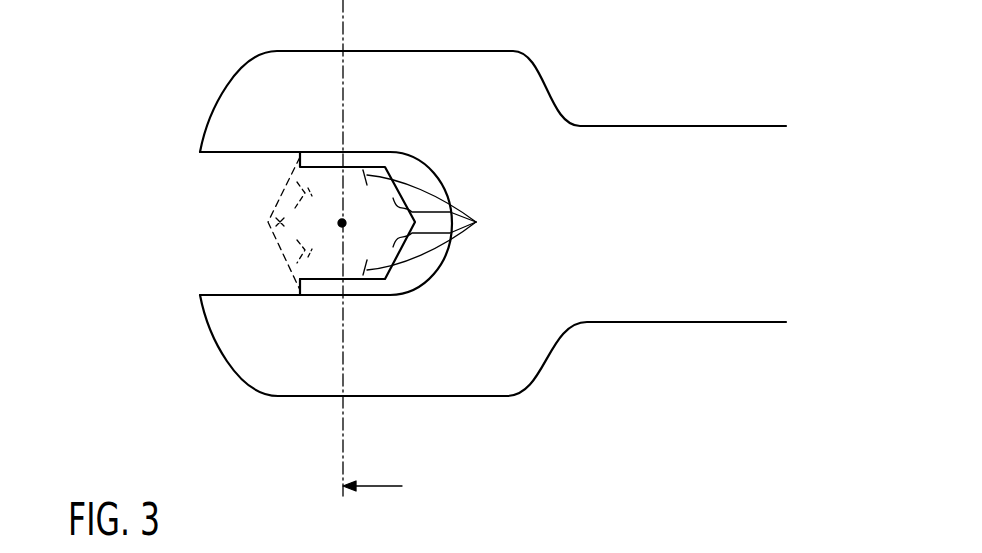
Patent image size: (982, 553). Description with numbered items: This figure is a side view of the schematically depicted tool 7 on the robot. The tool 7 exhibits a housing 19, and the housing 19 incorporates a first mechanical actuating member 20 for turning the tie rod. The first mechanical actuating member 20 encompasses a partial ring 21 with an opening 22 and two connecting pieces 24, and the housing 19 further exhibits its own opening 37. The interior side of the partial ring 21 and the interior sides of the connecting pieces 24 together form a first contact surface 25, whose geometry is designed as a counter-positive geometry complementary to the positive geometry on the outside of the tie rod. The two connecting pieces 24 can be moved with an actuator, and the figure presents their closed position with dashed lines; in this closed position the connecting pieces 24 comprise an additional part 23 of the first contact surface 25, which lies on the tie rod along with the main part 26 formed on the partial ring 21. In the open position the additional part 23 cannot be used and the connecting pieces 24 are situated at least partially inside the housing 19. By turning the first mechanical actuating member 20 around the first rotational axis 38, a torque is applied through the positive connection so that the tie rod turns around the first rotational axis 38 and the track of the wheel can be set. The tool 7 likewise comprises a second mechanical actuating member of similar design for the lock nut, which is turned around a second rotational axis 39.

The tool 7 is at (638, 370).
The housing 19 is at (435, 82).
The first mechanical actuating member 20 is at (225, 306).
The partial ring 21 is at (342, 226).
The opening 22 is at (293, 223).
The additional part of the first contact surface 23 is at (330, 172).
The connecting pieces 24 is at (268, 212).
The first contact surface 25 is at (398, 225).
The main part of the first contact surface 26 is at (450, 222).
The opening 37 is at (228, 210).
The first rotational axis 38 is at (356, 335).
The second rotational axis 39 is at (330, 283).